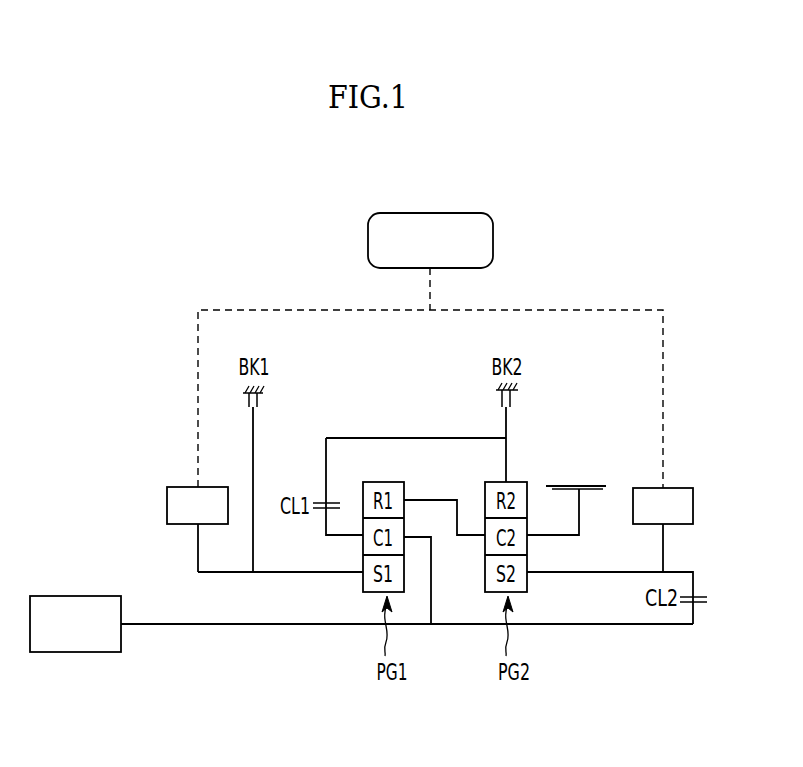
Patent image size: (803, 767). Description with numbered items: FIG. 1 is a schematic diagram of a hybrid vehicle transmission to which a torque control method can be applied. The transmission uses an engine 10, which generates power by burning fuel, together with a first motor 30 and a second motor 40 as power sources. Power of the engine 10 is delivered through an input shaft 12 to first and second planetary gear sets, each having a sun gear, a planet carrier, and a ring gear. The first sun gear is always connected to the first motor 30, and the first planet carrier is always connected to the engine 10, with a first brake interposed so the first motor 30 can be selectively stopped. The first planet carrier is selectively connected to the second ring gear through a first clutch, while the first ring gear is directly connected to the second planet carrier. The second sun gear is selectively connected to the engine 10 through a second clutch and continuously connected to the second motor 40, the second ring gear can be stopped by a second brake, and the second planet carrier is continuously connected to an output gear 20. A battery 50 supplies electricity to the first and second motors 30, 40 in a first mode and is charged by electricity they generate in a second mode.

The engine 10 is at (77, 652).
The input shaft 12 is at (240, 626).
The output gear 20 is at (592, 488).
The first motor 30 is at (167, 505).
The second motor 40 is at (680, 488).
The battery 50 is at (493, 240).